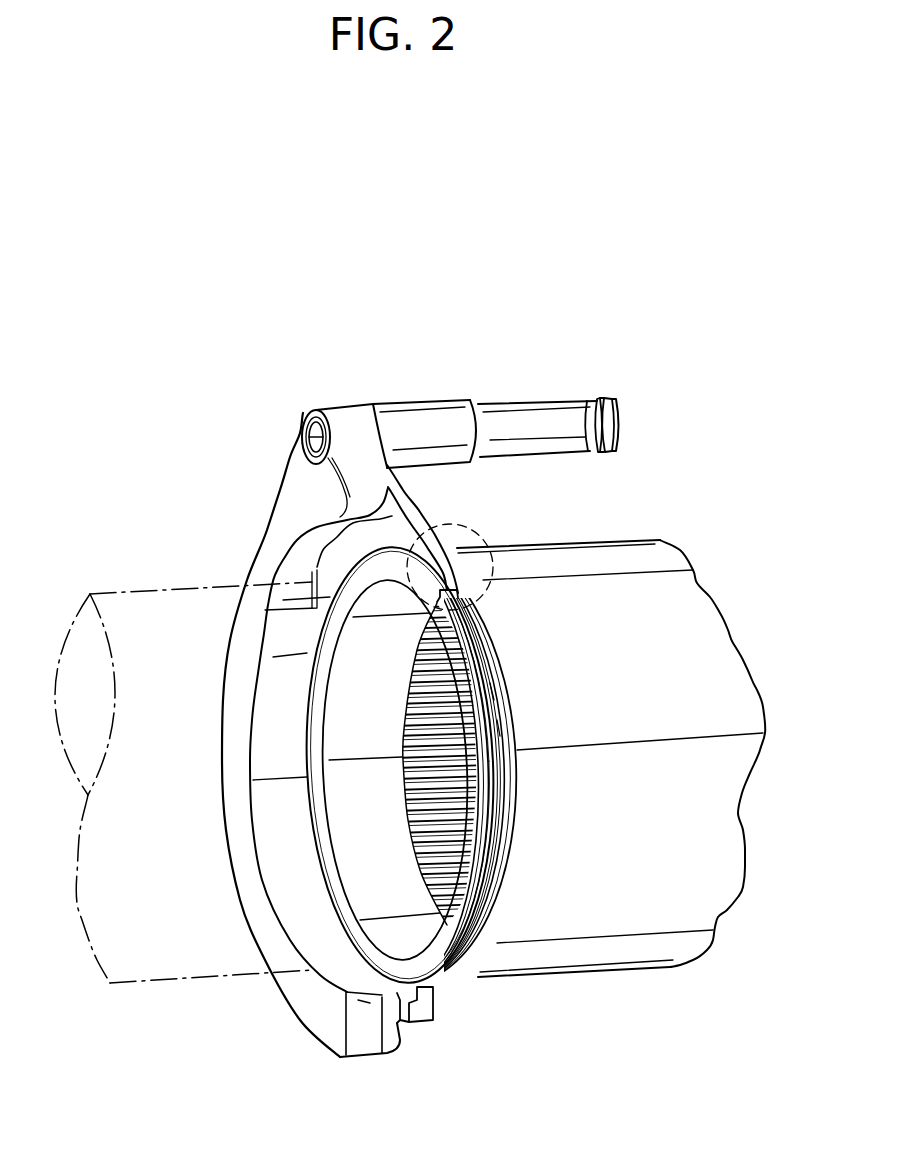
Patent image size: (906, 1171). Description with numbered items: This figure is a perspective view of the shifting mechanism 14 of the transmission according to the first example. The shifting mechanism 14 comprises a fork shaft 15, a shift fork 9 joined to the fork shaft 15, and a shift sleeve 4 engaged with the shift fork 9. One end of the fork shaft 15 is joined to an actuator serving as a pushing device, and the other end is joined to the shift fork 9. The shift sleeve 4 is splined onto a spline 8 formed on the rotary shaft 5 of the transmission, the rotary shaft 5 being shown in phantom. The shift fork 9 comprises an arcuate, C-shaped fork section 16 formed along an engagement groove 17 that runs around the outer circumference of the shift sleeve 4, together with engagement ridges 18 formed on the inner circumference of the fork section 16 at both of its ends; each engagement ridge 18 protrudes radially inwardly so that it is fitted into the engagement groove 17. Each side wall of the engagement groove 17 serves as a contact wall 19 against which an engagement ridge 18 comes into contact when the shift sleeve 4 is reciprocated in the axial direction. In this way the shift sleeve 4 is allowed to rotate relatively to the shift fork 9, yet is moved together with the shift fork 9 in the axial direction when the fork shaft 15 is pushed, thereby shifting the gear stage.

The shift sleeve 4 is at (597, 953).
The rotary shaft 5 is at (181, 979).
The spline 8 is at (478, 773).
The shift fork 9 is at (238, 535).
The shifting mechanism 14 is at (248, 423).
The fork shaft 15 is at (528, 416).
The fork section 16 is at (405, 535).
The engagement groove 17 is at (507, 838).
The engagement ridge 18 is at (453, 595).
The contact wall 19 is at (500, 713).